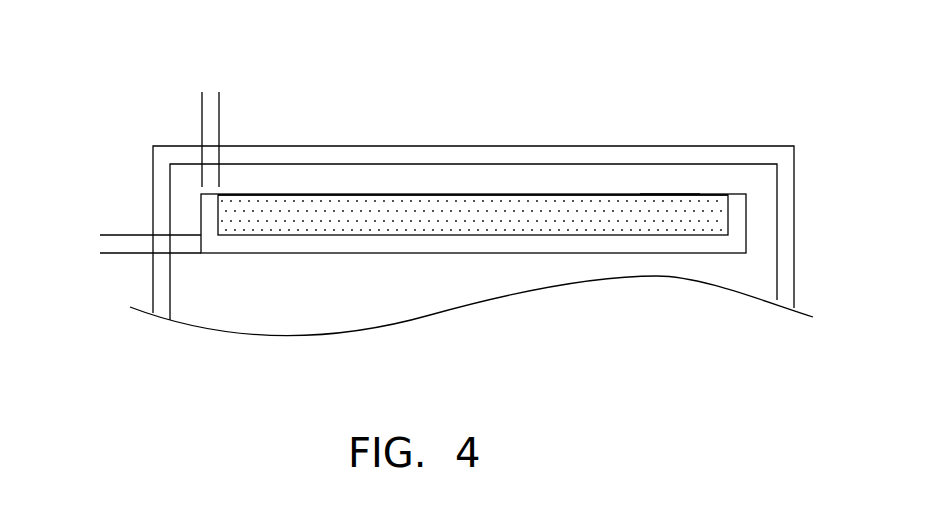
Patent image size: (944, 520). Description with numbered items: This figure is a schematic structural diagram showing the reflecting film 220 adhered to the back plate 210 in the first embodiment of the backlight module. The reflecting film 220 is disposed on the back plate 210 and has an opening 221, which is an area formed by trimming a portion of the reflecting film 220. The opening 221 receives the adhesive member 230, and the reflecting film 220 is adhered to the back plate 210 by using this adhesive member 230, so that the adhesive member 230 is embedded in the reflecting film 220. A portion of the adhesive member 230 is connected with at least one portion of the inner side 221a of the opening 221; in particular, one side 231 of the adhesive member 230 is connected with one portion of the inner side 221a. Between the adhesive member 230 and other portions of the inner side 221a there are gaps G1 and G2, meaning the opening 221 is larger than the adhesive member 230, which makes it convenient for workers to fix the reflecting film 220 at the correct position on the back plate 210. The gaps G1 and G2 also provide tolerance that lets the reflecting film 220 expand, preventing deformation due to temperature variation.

The back plate 210 is at (163, 158).
The reflecting film 220 is at (270, 180).
The opening 221 is at (415, 245).
The inner side of the opening 221a is at (662, 190).
The adhesive member 230 is at (580, 205).
The side of the adhesive member 231 is at (520, 202).
The gap G1 is at (253, 101).
The gap G2 is at (106, 203).